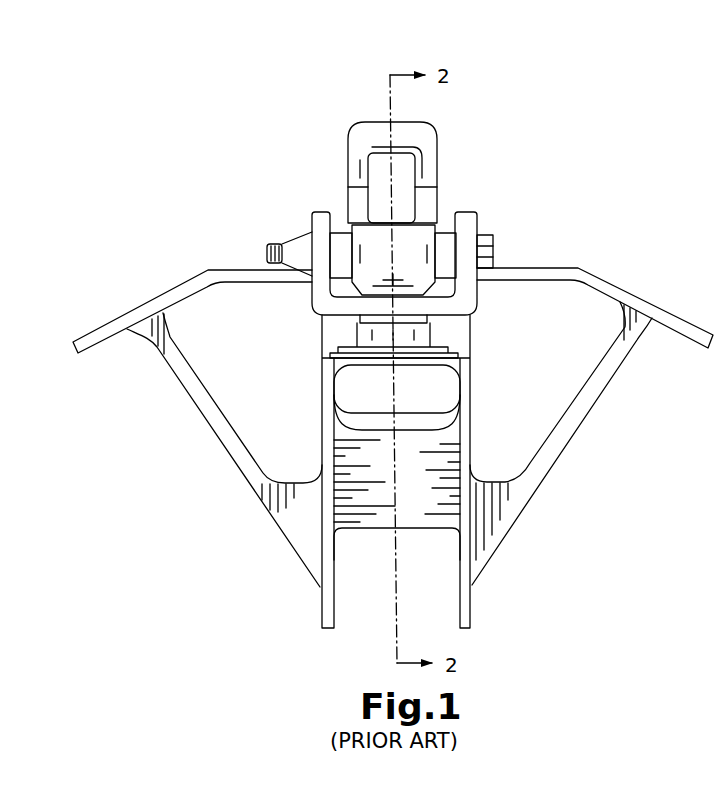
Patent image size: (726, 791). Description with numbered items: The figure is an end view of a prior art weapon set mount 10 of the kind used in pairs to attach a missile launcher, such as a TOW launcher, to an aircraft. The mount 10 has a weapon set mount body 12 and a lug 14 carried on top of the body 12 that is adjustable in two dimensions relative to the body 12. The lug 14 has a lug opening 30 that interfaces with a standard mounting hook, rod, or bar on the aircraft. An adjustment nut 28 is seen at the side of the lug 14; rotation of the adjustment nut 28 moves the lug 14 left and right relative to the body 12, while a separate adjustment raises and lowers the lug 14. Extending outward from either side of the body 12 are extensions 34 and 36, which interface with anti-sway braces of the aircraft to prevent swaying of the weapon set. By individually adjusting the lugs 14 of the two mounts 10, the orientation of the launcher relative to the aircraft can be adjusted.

The weapon set mount 10 is at (163, 135).
The weapon set mount body 12 is at (181, 254).
The lug 14 is at (363, 110).
The adjustment nut 28 is at (273, 244).
The lug opening 30 is at (407, 168).
The extension 34 is at (90, 337).
The extension 36 is at (687, 328).